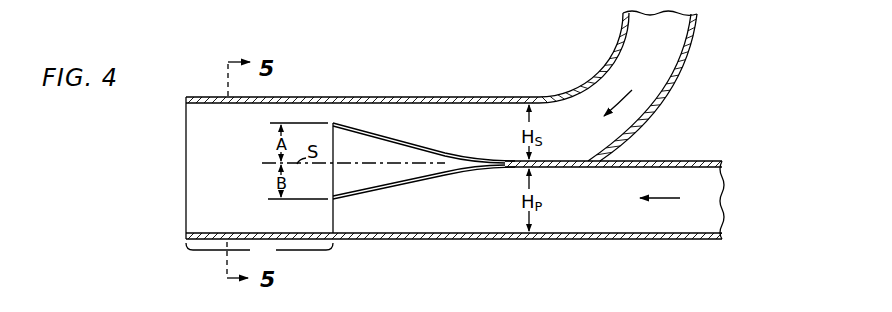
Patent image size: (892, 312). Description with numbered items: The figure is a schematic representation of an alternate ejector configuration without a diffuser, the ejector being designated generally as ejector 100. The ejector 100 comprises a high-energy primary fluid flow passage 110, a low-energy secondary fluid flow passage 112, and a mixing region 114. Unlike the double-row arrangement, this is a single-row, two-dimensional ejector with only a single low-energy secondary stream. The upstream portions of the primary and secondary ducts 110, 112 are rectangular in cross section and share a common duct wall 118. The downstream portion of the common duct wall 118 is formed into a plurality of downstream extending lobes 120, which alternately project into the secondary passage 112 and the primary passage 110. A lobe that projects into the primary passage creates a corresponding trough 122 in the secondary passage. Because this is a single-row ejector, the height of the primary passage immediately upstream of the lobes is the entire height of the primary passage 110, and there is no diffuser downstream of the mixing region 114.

The ejector 100 is at (436, 80).
The primary fluid flow passage 110 is at (662, 221).
The secondary fluid flow passage 112 is at (658, 81).
The mixing region 114 is at (259, 179).
The common duct wall 118 is at (541, 161).
The lobes 120 is at (393, 138).
The trough 122 is at (375, 186).